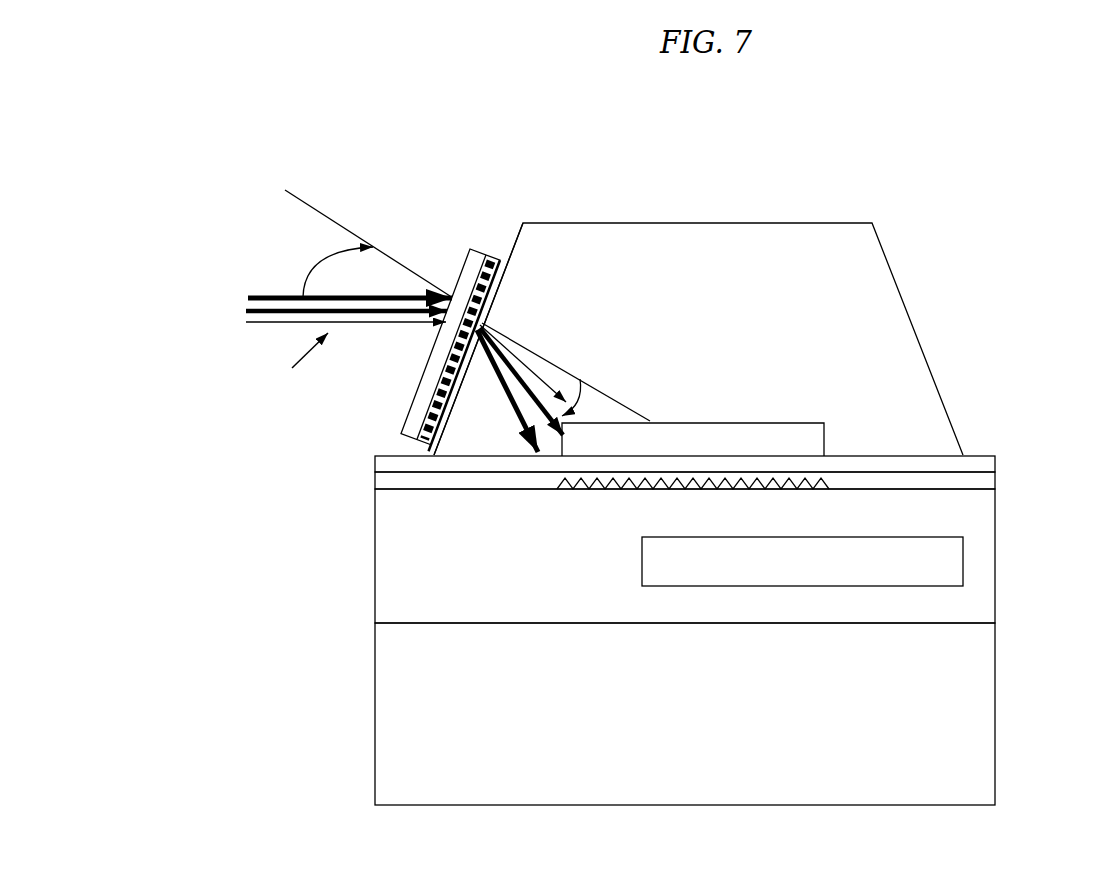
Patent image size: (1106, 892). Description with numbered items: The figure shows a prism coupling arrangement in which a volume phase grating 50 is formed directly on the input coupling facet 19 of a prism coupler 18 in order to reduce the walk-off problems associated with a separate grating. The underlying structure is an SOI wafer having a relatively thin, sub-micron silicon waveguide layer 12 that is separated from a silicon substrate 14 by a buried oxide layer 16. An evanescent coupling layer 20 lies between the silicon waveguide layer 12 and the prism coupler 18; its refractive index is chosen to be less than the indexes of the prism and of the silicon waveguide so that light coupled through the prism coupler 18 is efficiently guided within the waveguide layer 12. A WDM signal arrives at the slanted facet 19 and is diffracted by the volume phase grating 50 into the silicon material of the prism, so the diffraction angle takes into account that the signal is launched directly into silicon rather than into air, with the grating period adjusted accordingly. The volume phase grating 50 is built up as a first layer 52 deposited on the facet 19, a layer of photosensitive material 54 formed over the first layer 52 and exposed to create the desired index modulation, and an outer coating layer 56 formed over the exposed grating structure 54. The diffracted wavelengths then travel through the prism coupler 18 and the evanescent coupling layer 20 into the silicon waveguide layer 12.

The silicon waveguide layer 12 is at (982, 482).
The silicon substrate 14 is at (393, 722).
The buried oxide layer 16 is at (390, 543).
The prism coupling device 18 is at (662, 240).
The input coupling facet 19 is at (515, 240).
The evanescent coupling layer 20 is at (373, 465).
The volume phase grating 50 is at (401, 312).
The first layer 52 is at (450, 350).
The layer of photosensitive material 54 is at (450, 347).
The outer coating layer 56 is at (488, 281).